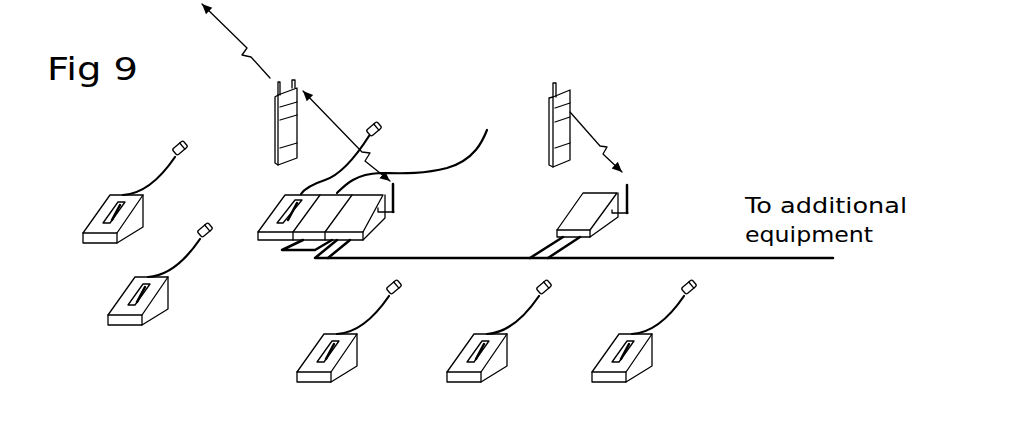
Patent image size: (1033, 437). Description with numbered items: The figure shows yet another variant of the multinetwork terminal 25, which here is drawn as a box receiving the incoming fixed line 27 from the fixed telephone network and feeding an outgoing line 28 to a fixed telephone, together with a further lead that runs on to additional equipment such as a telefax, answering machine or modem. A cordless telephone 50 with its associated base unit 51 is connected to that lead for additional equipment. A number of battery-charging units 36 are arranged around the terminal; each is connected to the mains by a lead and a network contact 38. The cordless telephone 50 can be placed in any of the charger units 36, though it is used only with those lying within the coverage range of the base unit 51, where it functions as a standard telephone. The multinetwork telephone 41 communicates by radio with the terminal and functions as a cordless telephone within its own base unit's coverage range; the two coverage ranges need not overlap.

The multinetwork terminal 25 is at (254, 268).
The incoming fixed line 27 is at (478, 150).
The outgoing line 28 is at (295, 252).
The battery-charging unit 36 is at (100, 215).
The network contact 38 is at (368, 124).
The multinetwork telephone 41 is at (275, 123).
The cordless telephone 50 is at (557, 100).
The base unit 51 is at (608, 222).